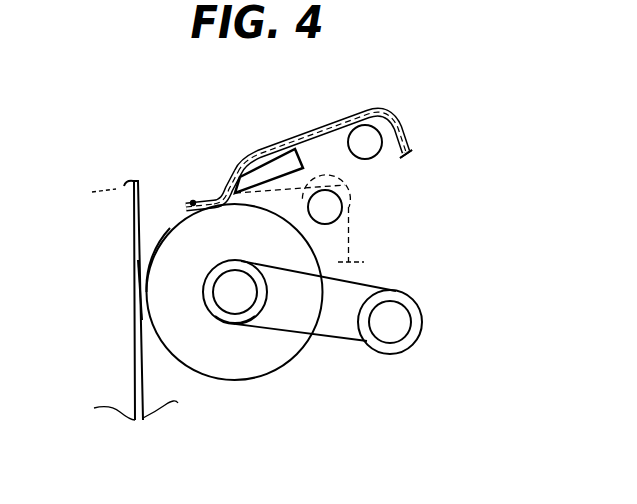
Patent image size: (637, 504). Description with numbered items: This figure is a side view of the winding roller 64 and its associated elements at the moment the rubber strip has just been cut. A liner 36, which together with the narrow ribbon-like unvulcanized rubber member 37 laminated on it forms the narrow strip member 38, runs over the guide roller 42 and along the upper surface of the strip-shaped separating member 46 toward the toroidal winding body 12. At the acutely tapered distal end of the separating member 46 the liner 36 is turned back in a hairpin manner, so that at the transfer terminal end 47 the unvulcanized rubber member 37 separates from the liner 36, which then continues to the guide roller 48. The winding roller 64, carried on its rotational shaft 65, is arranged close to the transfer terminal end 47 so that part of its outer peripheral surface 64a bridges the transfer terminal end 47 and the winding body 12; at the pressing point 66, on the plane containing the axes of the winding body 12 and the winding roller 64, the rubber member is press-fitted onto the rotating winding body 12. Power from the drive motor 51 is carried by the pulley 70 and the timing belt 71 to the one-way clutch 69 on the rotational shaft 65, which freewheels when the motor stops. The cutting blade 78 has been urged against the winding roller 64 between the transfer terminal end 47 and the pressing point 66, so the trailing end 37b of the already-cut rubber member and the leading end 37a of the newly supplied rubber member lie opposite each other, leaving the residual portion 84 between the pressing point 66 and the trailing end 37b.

The winding body 12 is at (118, 196).
The liner 36 is at (351, 247).
The unvulcanized rubber member 37 is at (325, 127).
The leading end 37a is at (190, 203).
The trailing end 37b is at (200, 206).
The narrow strip member 38 is at (346, 112).
The guide roller 42 is at (362, 152).
The separating member 46 is at (276, 160).
The transfer terminal end 47 is at (238, 205).
The guide roller 48 is at (328, 209).
The drive motor 51 is at (421, 313).
The winding roller 64 is at (257, 364).
The outer peripheral surface 64a is at (146, 248).
The rotational shaft 65 is at (222, 292).
The pressing point 66 is at (141, 288).
The one-way clutch 69 is at (238, 323).
The pulley 70 is at (396, 333).
The timing belt 71 is at (330, 339).
The cutting blade 78 is at (194, 201).
The residual portion 84 is at (162, 240).